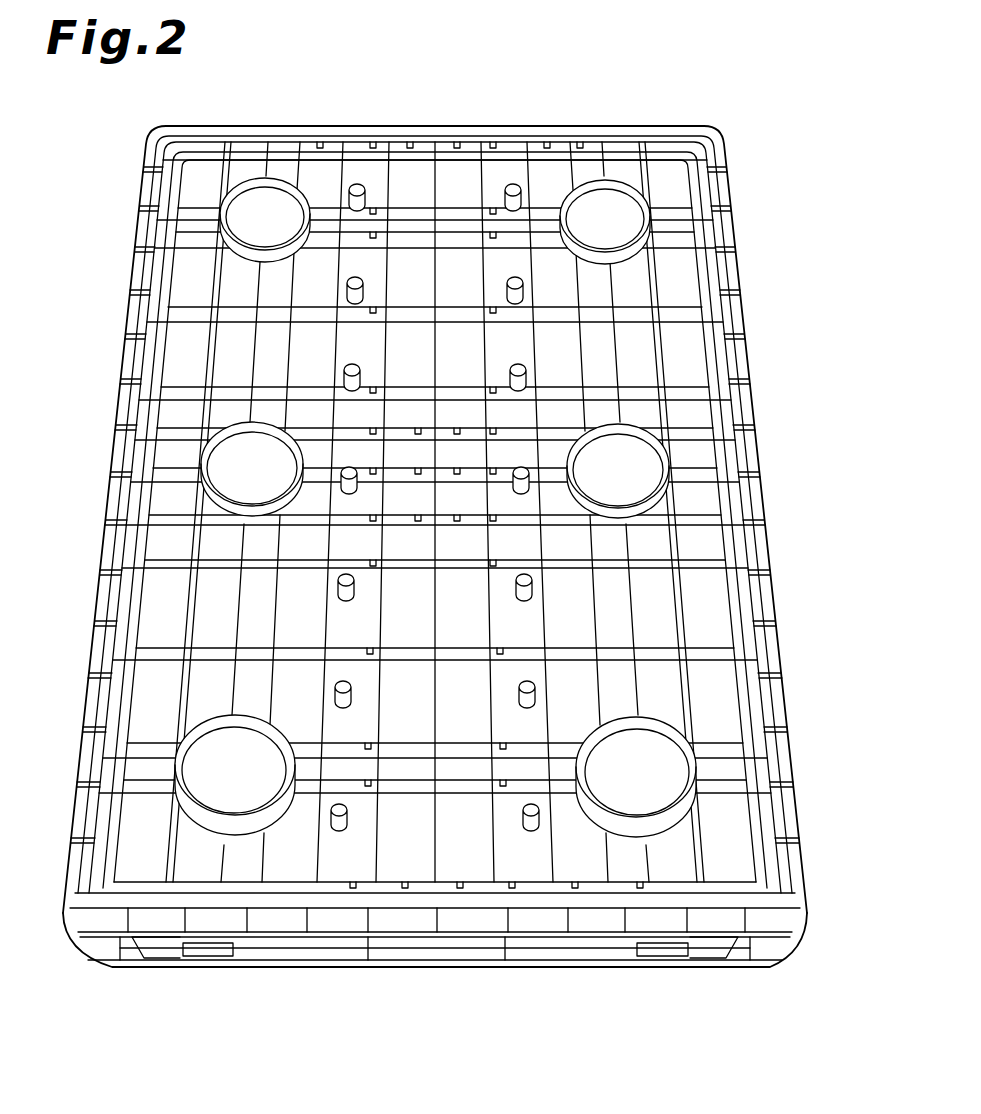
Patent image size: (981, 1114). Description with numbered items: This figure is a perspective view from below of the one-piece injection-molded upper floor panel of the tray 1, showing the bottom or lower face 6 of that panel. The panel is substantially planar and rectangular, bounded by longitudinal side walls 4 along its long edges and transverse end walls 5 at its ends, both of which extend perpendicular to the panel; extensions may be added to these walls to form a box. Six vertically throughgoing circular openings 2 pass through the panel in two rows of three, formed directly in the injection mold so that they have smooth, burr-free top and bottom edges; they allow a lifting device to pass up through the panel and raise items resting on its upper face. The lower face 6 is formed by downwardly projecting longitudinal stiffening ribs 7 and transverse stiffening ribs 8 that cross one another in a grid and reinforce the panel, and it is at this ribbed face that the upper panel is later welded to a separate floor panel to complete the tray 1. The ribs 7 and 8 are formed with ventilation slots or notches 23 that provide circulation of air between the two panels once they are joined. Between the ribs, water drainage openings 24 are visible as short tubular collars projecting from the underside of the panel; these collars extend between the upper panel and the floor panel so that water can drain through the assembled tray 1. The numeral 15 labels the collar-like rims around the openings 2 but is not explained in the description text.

The tray 1 is at (722, 116).
The openings 2 is at (250, 212).
The longitudinal side walls 4 is at (143, 254).
The transverse end walls 5 is at (476, 133).
The lower face 6 is at (462, 845).
The longitudinal stiffening ribs 7 is at (338, 188).
The transverse stiffening ribs 8 is at (412, 208).
The collar of opening 15 is at (262, 178).
The ventilation slots or notches 23 is at (158, 537).
The water drainage openings 24 is at (534, 580).